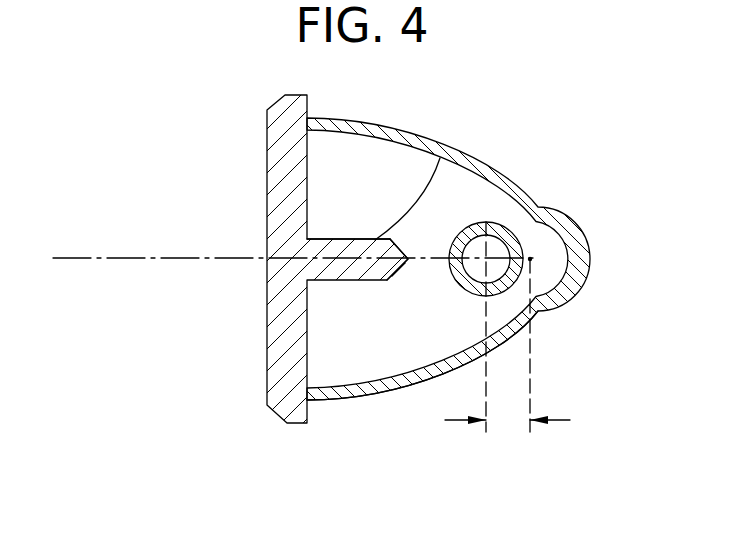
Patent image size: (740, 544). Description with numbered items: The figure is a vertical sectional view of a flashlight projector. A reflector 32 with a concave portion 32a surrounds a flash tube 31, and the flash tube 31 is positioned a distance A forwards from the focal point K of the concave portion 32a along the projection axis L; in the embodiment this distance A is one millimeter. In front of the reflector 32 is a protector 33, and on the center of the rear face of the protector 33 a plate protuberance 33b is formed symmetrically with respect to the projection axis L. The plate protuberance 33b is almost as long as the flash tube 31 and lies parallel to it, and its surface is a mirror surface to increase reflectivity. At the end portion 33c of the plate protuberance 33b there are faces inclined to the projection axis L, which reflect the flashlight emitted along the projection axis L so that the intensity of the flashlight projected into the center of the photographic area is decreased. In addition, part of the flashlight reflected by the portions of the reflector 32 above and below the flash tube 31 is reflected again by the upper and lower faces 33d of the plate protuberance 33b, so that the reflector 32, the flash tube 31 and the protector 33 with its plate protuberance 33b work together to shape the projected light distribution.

The flash tube 31 is at (492, 222).
The reflector 32 is at (350, 400).
The concave portion 32a is at (393, 386).
The protector 33 is at (267, 130).
The plate protuberance 33b is at (445, 147).
The end portion 33c is at (398, 256).
The upper and lower faces 33d is at (340, 239).
The focal point K is at (531, 258).
The projection axis L is at (150, 260).
The distance A is at (507, 339).